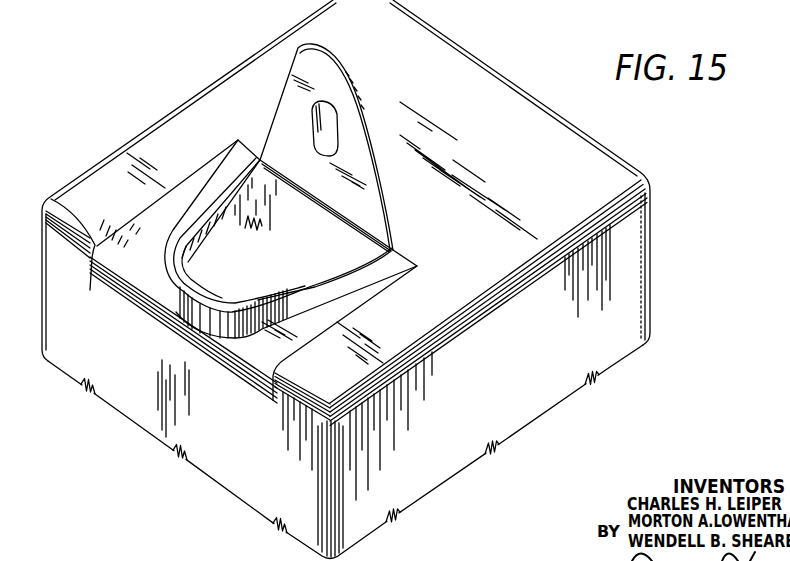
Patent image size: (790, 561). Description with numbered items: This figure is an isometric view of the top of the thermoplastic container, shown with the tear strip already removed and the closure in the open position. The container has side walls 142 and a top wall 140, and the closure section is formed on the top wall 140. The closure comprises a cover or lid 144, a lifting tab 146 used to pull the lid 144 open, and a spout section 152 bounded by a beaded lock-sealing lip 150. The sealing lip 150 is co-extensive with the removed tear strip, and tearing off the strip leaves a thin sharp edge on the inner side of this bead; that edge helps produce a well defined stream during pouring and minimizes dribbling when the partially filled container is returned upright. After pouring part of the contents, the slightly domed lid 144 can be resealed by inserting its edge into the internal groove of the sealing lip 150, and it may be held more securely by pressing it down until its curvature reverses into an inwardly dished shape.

The top wall 140 is at (475, 278).
The side walls 142 is at (125, 398).
The lid 144 is at (363, 104).
The lifting tab 146 is at (313, 128).
The sealing lip 150 is at (172, 237).
The spout section 152 is at (228, 321).